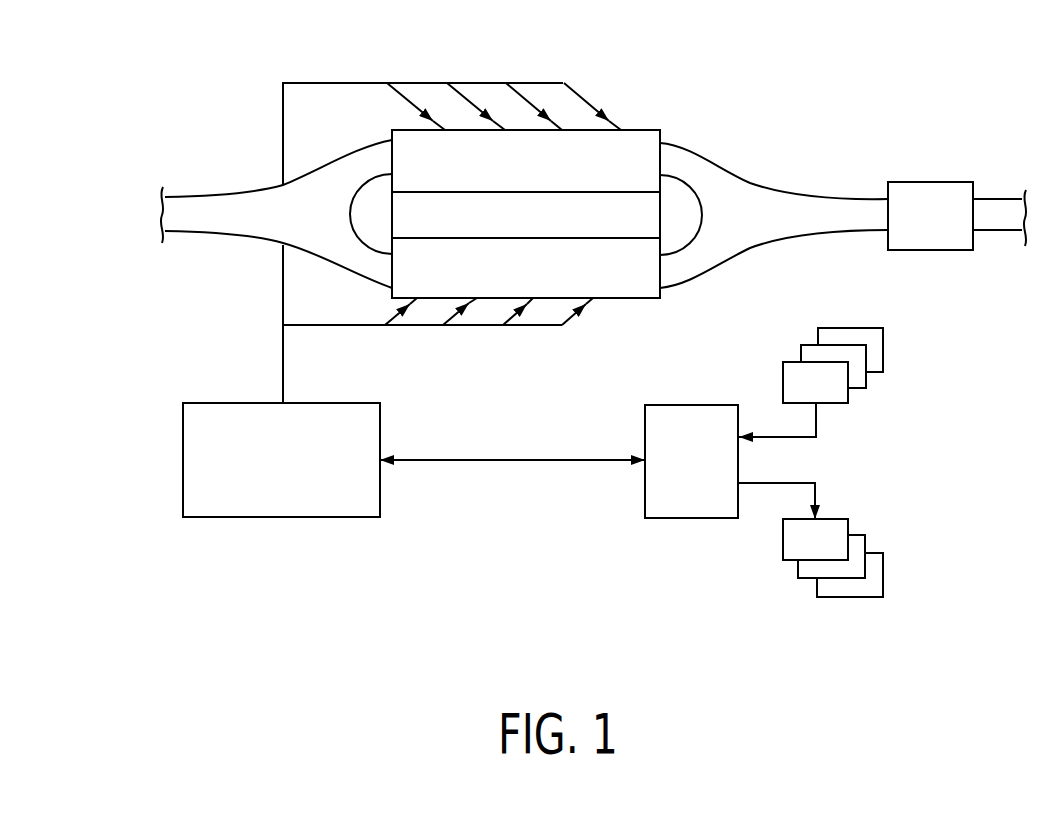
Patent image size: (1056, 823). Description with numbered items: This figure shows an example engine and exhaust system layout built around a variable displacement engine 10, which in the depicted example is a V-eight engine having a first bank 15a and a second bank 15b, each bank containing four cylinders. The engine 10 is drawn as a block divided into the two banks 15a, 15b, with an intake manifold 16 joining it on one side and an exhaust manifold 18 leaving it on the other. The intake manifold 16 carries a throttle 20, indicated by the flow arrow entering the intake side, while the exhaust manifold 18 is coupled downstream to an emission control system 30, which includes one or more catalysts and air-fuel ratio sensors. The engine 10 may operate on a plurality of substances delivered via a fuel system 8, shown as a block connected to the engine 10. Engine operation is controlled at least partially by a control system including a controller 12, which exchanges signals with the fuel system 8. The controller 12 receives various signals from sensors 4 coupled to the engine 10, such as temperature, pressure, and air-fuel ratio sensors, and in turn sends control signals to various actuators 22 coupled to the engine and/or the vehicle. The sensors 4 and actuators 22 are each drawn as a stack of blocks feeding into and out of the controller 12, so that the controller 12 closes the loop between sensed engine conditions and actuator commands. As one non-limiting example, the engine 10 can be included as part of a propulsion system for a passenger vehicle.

The variable displacement engine 10 is at (539, 171).
The first bank 15a is at (545, 178).
The second bank 15b is at (545, 279).
The intake manifold 16 is at (267, 188).
The exhaust manifold 18 is at (728, 185).
The throttle 20 is at (239, 222).
The emission control system 30 is at (933, 182).
The fuel system 8 is at (282, 520).
The controller 12 is at (667, 520).
The sensors 4 is at (885, 347).
The actuators 22 is at (883, 568).